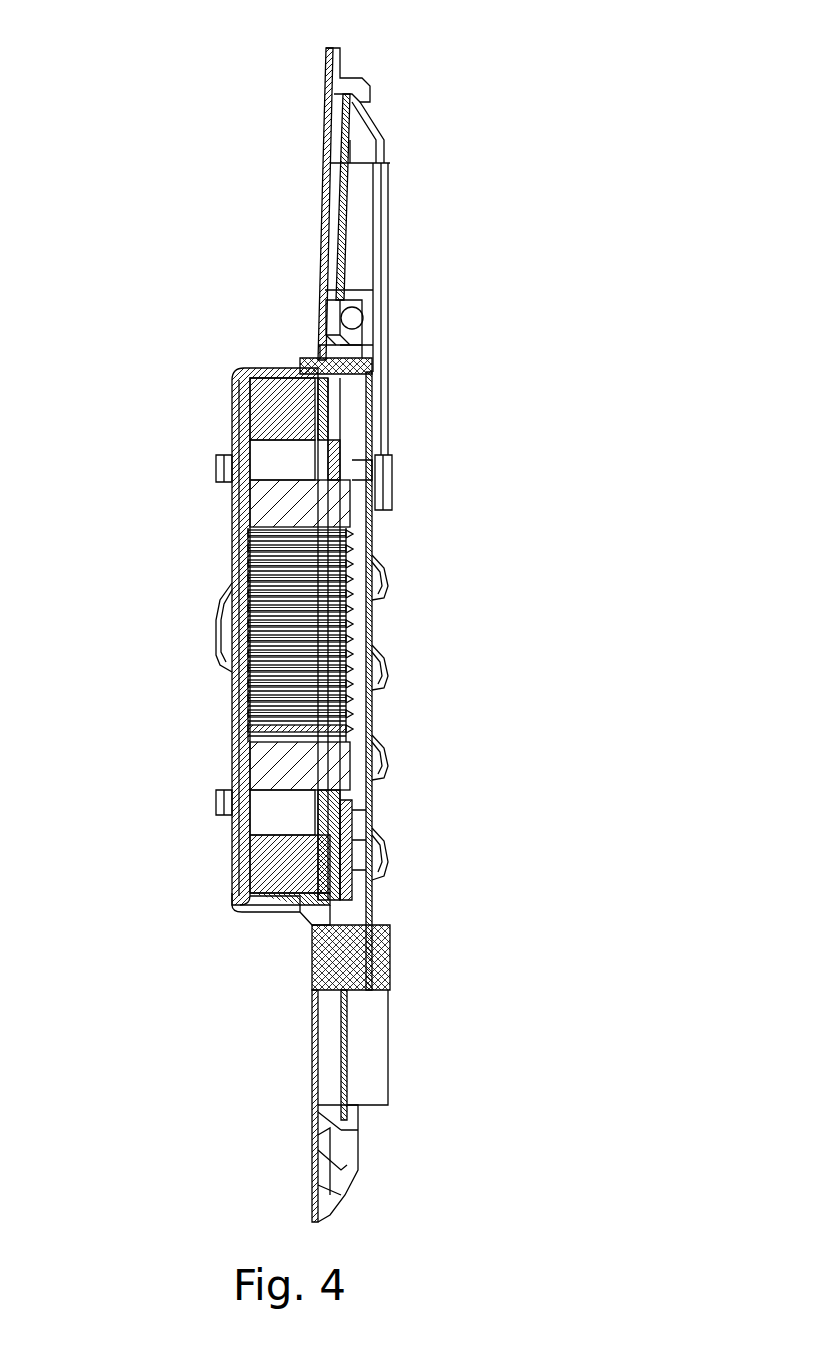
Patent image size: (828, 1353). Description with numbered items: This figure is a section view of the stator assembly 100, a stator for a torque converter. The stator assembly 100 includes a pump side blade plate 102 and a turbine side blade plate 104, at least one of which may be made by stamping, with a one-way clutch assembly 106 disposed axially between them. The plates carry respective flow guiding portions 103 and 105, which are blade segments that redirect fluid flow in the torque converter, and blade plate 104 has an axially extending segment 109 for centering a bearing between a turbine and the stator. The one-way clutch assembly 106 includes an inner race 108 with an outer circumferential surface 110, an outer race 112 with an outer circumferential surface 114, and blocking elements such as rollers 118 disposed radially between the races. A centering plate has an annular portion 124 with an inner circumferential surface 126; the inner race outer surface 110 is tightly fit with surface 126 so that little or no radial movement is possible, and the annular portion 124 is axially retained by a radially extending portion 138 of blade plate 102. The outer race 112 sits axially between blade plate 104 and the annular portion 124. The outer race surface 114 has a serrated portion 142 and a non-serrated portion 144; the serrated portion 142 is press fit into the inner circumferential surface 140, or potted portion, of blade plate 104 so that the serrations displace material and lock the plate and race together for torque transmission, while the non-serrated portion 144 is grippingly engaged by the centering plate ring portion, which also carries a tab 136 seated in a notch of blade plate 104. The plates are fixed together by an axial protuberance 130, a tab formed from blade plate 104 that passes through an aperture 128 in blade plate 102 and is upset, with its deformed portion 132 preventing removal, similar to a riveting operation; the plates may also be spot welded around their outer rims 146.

The stator assembly 100 is at (538, 130).
The blade plate 102 is at (380, 72).
The flow guiding portion 103 is at (360, 243).
The blade plate 104 is at (330, 108).
The flow guiding portion 105 is at (335, 225).
The one-way clutch assembly 106 is at (220, 437).
The inner race 108 is at (388, 497).
The axially extending segment 109 is at (218, 470).
The outer circumferential surface 110 is at (306, 478).
The outer race 112 is at (232, 400).
The outer circumferential surface 114 is at (335, 926).
The rollers 118 is at (228, 836).
The annular portion 124 is at (345, 824).
The inner circumferential surface 126 is at (340, 494).
The aperture 128 is at (318, 336).
The axial protuberance 130 is at (318, 360).
The deformed portion 132 is at (348, 372).
The tab 136 is at (300, 920).
The radially extending portion 138 is at (340, 852).
The inner circumferential surface 140 is at (229, 872).
The serrated portion 142 is at (262, 910).
The non-serrated portion 144 is at (290, 374).
The outer rims 146 is at (388, 114).